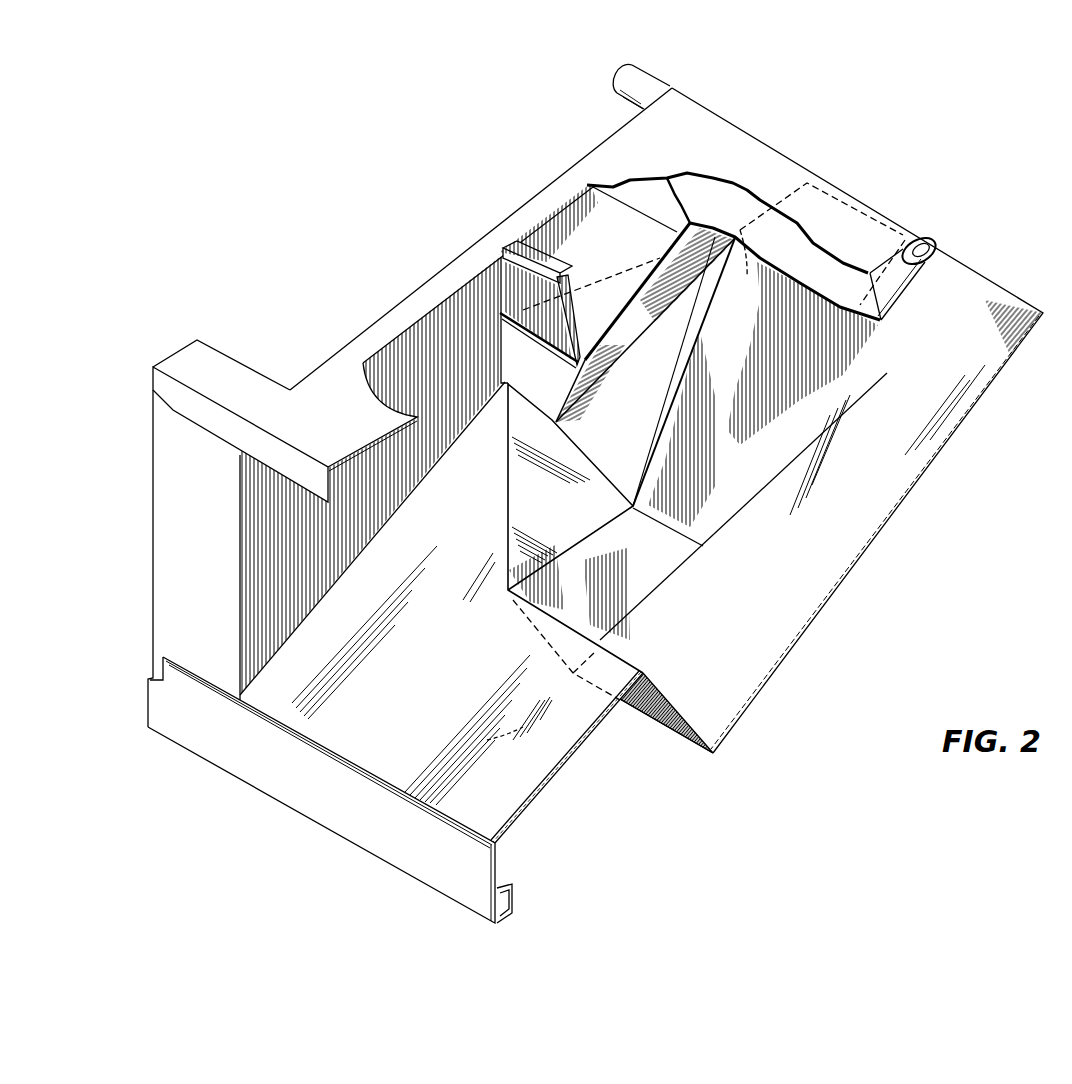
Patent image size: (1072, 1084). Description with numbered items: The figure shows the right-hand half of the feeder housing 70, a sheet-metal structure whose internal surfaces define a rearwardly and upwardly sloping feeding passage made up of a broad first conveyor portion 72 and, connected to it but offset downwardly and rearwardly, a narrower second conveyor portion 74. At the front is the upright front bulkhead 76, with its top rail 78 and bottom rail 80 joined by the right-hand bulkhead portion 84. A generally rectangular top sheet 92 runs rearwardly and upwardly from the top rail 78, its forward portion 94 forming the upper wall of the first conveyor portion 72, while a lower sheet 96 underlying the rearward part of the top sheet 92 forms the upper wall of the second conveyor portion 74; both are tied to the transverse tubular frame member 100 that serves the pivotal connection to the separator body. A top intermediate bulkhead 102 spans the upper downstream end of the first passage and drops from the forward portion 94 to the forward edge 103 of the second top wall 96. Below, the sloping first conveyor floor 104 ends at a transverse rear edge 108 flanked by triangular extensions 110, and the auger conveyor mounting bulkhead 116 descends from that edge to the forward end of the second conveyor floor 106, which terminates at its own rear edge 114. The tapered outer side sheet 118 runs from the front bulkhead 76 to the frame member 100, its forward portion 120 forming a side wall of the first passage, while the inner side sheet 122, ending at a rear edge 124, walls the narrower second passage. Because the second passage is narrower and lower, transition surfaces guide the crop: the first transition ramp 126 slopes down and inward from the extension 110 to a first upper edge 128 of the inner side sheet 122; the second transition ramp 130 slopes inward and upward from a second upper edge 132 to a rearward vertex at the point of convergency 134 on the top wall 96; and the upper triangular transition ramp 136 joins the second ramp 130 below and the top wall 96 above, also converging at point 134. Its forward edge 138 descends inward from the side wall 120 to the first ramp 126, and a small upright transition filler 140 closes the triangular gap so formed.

The feeder housing 70 is at (417, 220).
The first conveyor portion 72 is at (485, 752).
The second conveyor portion 74 is at (897, 428).
The front bulkhead 76 is at (142, 557).
The top rail 78 is at (153, 366).
The bottom rail 80 is at (205, 755).
The right-hand bulkhead portion 84 is at (152, 490).
The top sheet 92 is at (397, 443).
The forward portion of top sheet 94 is at (372, 410).
The second conveyor top wall 96 is at (893, 305).
The transverse tubular frame member 100 is at (648, 84).
The top intermediate bulkhead 102 is at (585, 290).
The forward edge of second conveyor top wall 103 is at (612, 360).
The first conveyor floor 104 is at (418, 712).
The second conveyor floor 106 is at (784, 536).
The transverse rear edge of first conveyor floor 108 is at (627, 657).
The triangular extension 110 is at (459, 509).
The transverse rear edge of second conveyor floor 114 is at (985, 264).
The auger conveyor mounting bulkhead 116 is at (688, 720).
The outer side sheet 118 is at (326, 347).
The forward portion of outer side sheet 120 is at (458, 394).
The inner side sheet 122 is at (745, 399).
The rear edge of inner side sheet 124 is at (845, 200).
The first transition ramp 126 is at (570, 514).
The first upper edge of second conveyor side wall 128 is at (548, 588).
The second transition ramp 130 is at (636, 448).
The second upper edge of second conveyor side wall 132 is at (703, 312).
The point of convergency 134 is at (785, 334).
The upper triangular transition ramp 136 is at (592, 383).
The forward edge of upper transition ramp 138 is at (523, 345).
The transition filler 140 is at (500, 363).